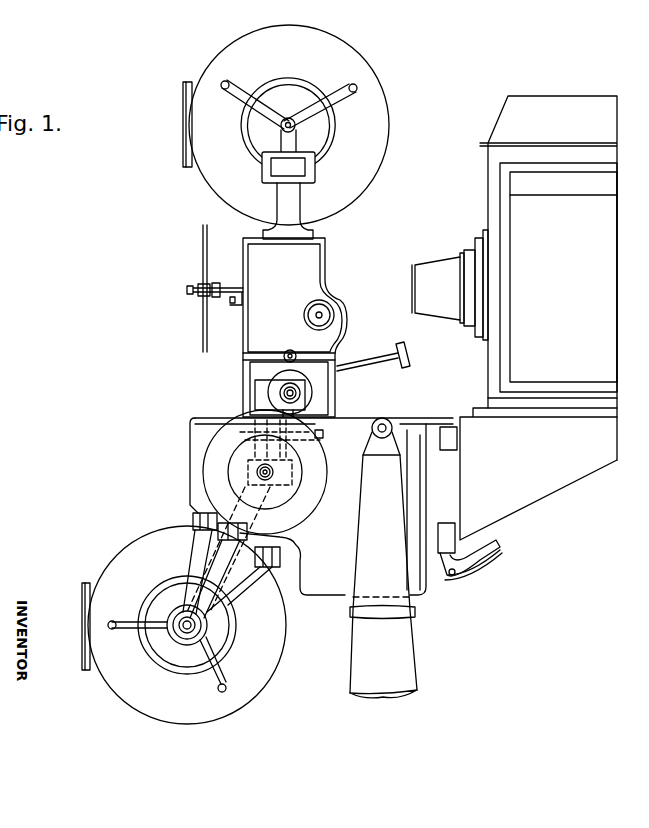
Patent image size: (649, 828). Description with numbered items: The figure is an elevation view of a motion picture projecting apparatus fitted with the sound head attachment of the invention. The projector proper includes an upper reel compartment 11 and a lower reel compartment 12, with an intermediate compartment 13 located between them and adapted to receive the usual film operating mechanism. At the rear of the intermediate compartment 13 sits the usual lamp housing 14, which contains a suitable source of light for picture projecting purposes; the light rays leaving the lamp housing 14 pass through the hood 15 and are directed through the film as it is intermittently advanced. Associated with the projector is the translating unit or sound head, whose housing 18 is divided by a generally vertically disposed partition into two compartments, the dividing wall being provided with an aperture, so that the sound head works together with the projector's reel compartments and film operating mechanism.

The upper reel compartment 11 is at (383, 129).
The lower reel compartment 12 is at (142, 549).
The intermediate compartment 13 is at (313, 265).
The lamp housing 14 is at (538, 318).
The hood 15 is at (450, 285).
The housing 18 is at (190, 450).